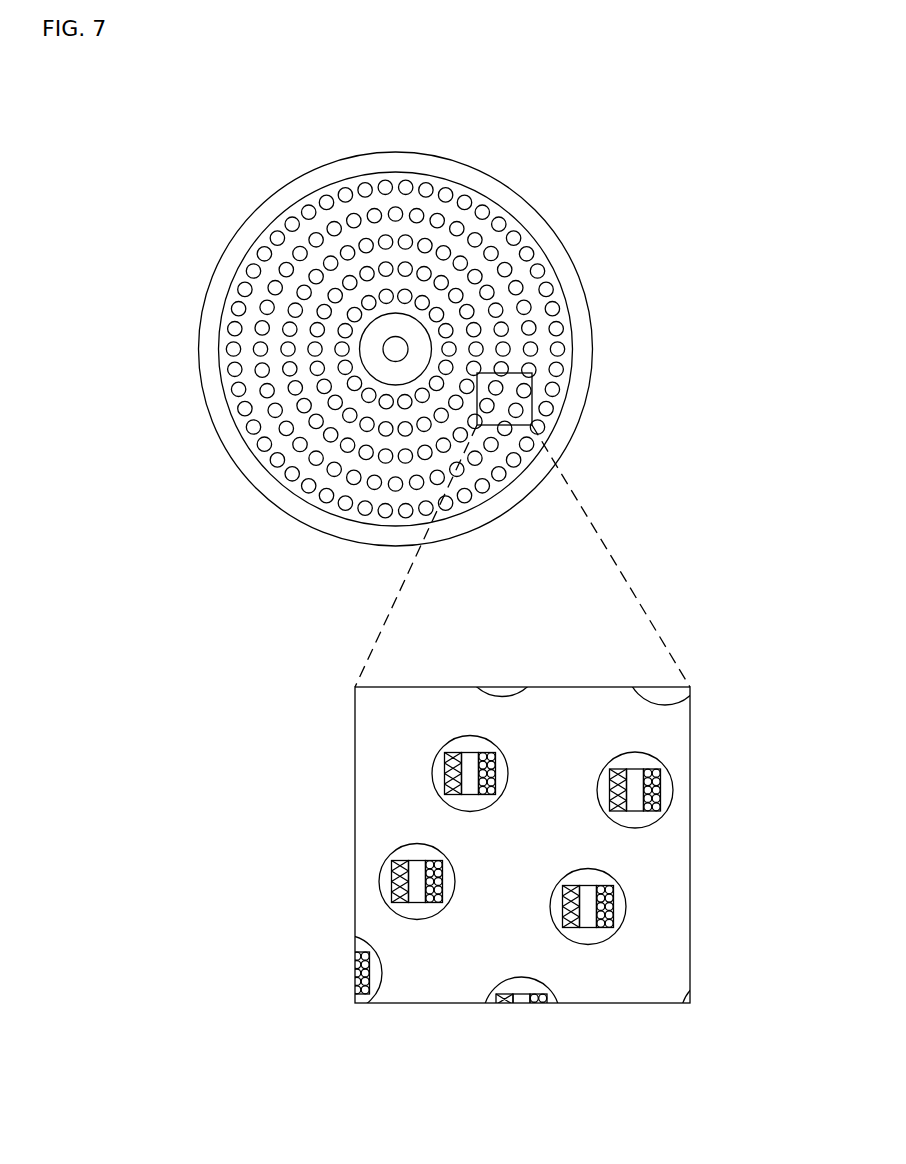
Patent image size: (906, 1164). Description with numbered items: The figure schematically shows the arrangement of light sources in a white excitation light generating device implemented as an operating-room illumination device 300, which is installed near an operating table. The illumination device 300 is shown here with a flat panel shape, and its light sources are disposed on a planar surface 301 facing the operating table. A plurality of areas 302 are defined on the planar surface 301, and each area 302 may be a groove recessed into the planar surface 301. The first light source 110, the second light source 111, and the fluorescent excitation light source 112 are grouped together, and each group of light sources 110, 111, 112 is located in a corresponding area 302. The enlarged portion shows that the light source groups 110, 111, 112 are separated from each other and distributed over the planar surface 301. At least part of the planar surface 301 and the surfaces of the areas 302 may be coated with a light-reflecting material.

The operating-room illumination device 300 is at (307, 172).
The planar surface 301 is at (555, 273).
The area 302 is at (672, 792).
The first light source 110 is at (655, 814).
The second light source 111 is at (633, 811).
The fluorescent excitation light source 112 is at (615, 811).